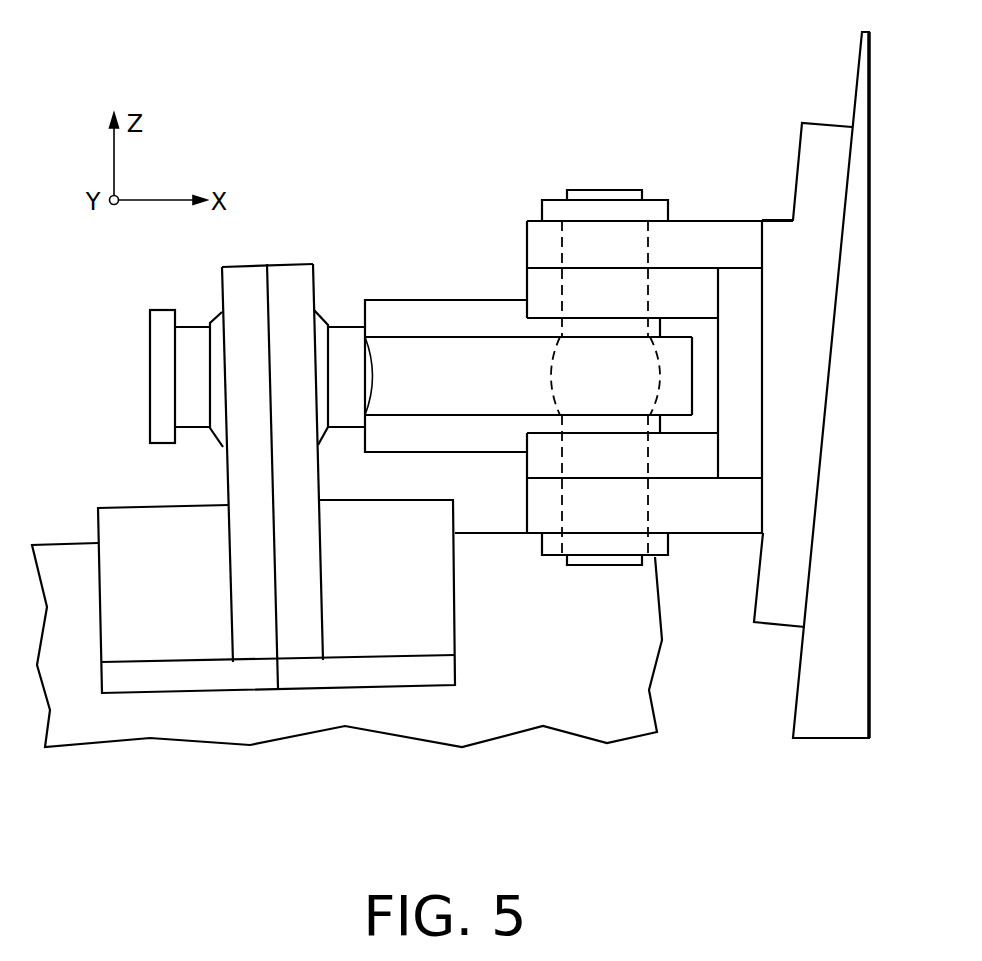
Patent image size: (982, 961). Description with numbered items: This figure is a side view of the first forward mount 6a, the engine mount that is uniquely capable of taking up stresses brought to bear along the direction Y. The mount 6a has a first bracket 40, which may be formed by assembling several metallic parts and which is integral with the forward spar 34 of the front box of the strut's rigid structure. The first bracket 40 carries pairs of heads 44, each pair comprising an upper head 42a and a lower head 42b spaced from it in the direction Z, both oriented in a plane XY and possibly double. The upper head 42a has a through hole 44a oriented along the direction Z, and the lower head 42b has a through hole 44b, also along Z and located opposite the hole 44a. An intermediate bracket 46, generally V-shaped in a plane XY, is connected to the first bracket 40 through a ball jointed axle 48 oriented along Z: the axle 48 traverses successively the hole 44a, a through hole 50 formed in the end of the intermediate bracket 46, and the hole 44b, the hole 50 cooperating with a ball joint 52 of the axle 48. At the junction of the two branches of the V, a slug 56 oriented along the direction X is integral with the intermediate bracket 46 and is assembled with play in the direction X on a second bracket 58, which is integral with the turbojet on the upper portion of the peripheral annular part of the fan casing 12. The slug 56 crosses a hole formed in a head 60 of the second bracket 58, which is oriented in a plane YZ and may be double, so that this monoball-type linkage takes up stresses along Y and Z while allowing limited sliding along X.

The fan casing 12 is at (160, 725).
The forward spar 34 is at (857, 72).
The first bracket 40 is at (515, 232).
The upper head 42a is at (698, 237).
The lower head 42b is at (695, 448).
The pair of heads 44 is at (803, 375).
The through hole 44a is at (647, 248).
The through hole 44b is at (562, 500).
The intermediate bracket 46 is at (418, 352).
The ball jointed axle 48 is at (600, 198).
The through hole 50 is at (547, 342).
The ball joint 52 is at (550, 390).
The slug 56 is at (197, 345).
The second bracket 58 is at (175, 573).
The head 60 is at (240, 483).
The first forward mount 6a is at (425, 217).